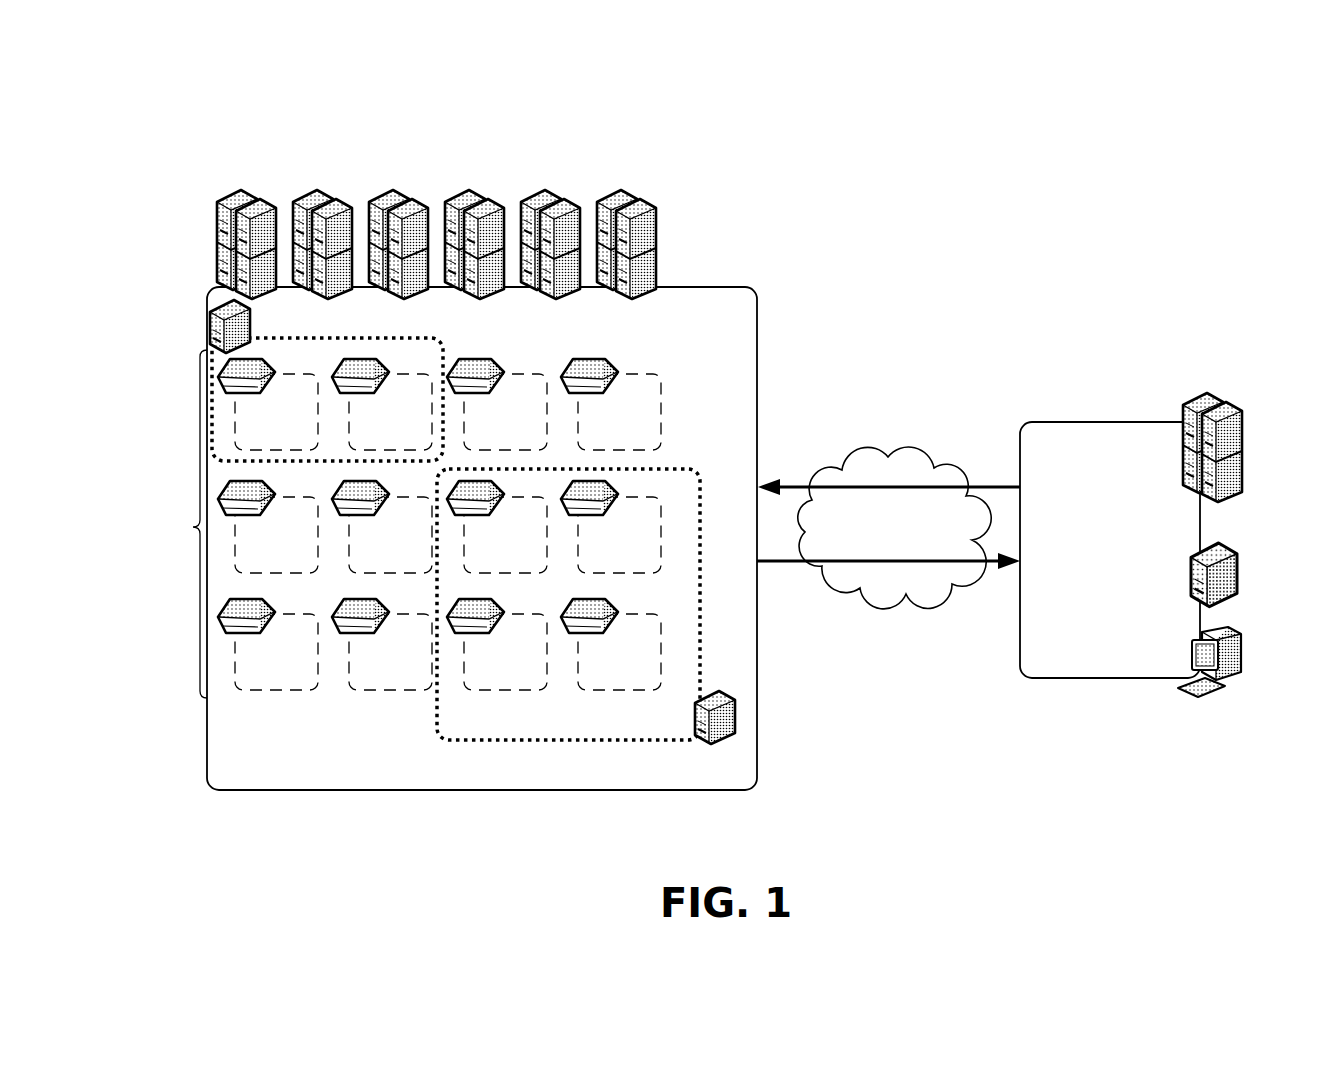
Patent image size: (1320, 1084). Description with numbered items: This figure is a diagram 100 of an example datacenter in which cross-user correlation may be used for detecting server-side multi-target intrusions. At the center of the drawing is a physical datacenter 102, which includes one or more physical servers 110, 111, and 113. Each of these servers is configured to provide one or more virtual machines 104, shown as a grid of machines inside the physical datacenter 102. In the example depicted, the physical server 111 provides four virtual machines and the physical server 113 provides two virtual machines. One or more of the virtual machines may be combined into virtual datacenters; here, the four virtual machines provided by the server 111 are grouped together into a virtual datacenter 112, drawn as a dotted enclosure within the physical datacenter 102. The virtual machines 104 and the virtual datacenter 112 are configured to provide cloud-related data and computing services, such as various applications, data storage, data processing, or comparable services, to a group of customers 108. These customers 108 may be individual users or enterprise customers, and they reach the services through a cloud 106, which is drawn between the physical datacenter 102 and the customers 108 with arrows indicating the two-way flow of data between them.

The diagram 100 is at (1184, 118).
The physical datacenter 102 is at (482, 538).
The virtual machines 104 is at (367, 518).
The cloud 106 is at (888, 434).
The customers 108 is at (1131, 545).
The physical servers 110 is at (199, 226).
The physical server 111 is at (739, 683).
The virtual datacenter 112 is at (672, 464).
The physical server 113 is at (214, 301).